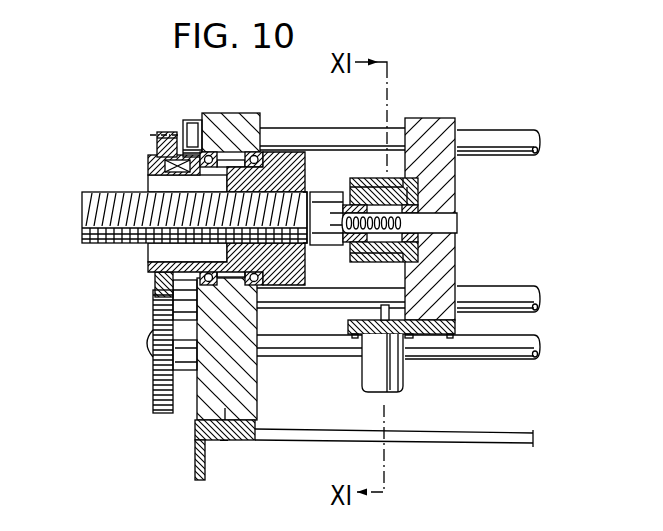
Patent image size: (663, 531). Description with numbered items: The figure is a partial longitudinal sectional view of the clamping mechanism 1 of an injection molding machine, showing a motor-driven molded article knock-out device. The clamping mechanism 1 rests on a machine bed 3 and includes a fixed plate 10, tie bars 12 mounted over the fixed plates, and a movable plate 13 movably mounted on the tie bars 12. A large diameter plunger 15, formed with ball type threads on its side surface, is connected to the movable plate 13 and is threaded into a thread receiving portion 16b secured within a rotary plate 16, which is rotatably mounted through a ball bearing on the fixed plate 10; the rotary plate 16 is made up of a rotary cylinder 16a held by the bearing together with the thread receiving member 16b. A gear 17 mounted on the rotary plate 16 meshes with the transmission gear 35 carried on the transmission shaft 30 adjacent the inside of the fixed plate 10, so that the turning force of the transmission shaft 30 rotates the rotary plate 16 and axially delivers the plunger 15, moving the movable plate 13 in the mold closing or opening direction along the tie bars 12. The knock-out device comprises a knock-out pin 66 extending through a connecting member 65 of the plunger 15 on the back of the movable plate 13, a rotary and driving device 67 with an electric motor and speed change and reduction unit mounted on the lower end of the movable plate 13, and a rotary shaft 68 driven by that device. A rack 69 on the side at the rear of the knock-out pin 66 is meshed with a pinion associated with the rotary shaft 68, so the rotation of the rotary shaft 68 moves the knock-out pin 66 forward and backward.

The clamping mechanism 1 is at (442, 180).
The machine bed 3 is at (200, 454).
The fixed plate 10 is at (229, 128).
The tie bar 12 is at (497, 140).
The movable plate 13 is at (423, 120).
The plunger 15 is at (98, 209).
The rotary plate 16 is at (275, 166).
The rotary cylinder 16a is at (231, 162).
The thread receiving portion 16b is at (296, 258).
The gear 17 is at (159, 131).
The transmission shaft 30 is at (483, 349).
The transmission gear 35 is at (153, 392).
The connecting member 65 is at (362, 177).
The knock-out pin 66 is at (443, 220).
The rotary and driving device 67 is at (395, 382).
The rotary shaft 68 is at (383, 323).
The rack 69 is at (345, 214).